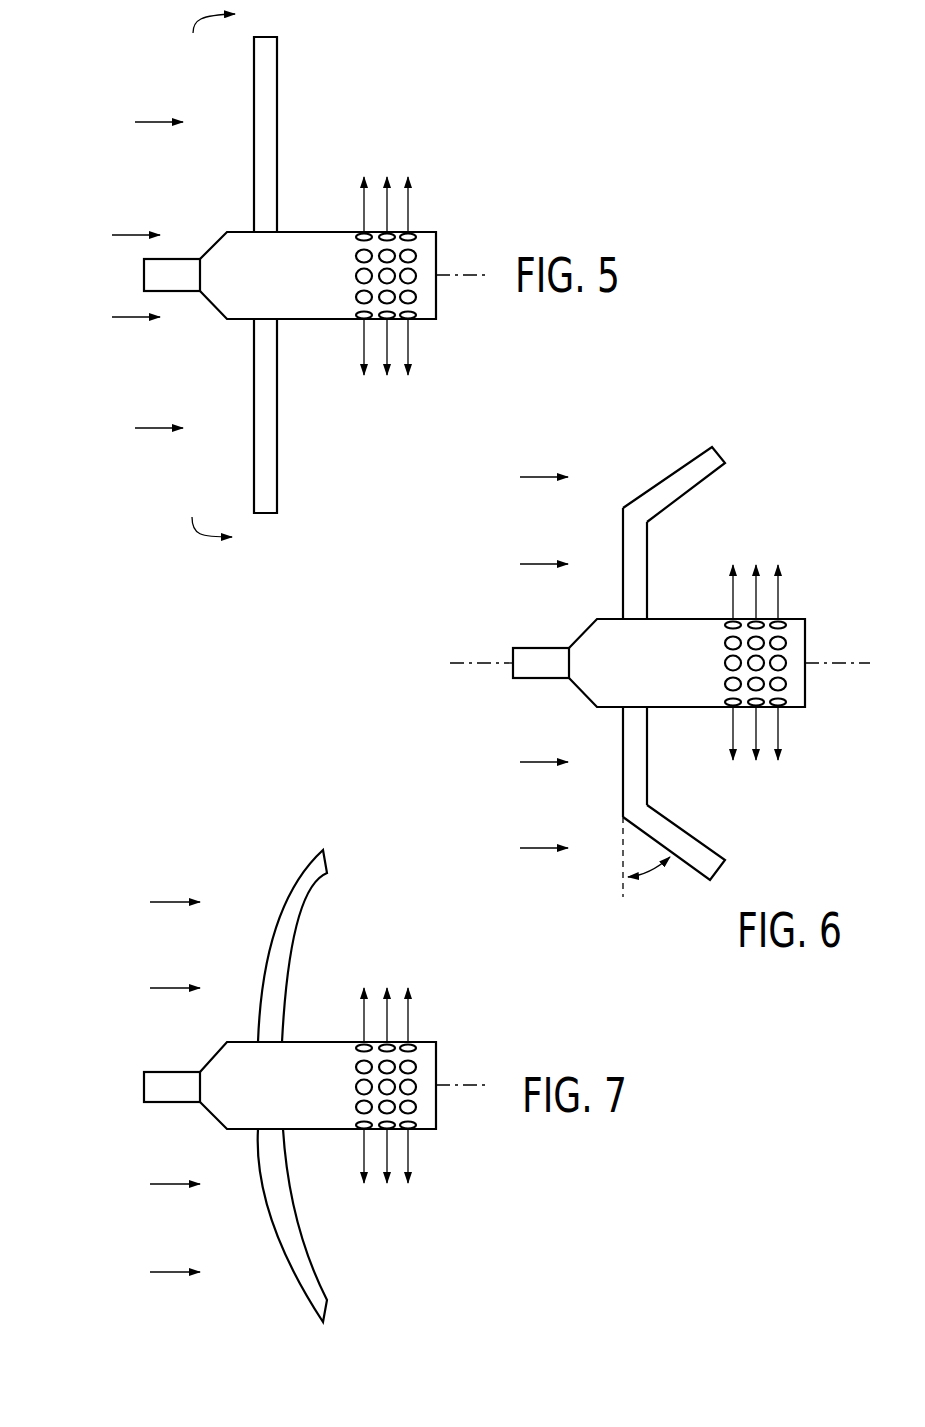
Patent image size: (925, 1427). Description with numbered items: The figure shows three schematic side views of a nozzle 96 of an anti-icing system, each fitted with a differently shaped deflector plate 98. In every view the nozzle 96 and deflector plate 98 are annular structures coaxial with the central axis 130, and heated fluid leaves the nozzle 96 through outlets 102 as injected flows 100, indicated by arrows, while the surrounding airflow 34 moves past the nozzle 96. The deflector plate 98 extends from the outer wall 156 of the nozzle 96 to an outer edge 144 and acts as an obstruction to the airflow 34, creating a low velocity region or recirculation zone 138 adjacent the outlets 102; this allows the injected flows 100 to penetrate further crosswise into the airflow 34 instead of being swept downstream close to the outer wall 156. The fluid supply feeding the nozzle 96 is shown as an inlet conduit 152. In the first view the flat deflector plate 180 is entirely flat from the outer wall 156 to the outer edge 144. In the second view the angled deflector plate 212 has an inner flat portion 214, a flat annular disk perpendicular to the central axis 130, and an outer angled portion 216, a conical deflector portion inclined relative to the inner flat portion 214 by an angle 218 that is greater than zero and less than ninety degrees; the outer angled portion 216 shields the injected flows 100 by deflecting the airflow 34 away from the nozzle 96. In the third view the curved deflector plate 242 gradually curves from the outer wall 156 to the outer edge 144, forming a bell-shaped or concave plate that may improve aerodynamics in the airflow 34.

In FIG. 5, the airflow 34 is at (158, 426).
In FIG. 6, the airflow 34 is at (535, 762).
In FIG. 7, the airflow 34 is at (168, 1184).
In FIG. 5, the nozzle 96 is at (275, 261).
In FIG. 6, the nozzle 96 is at (652, 653).
In FIG. 7, the nozzle 96 is at (275, 1078).
In FIG. 5, the deflector plate 98 is at (264, 296).
In FIG. 6, the deflector plate 98 is at (669, 671).
In FIG. 7, the deflector plate 98 is at (309, 1088).
In FIG. 5, the injected flows 100 is at (408, 210).
In FIG. 6, the injected flows 100 is at (778, 596).
In FIG. 7, the injected flows 100 is at (408, 1020).
In FIG. 5, the outlets 102 is at (357, 275).
In FIG. 6, the outlets 102 is at (725, 663).
In FIG. 7, the outlets 102 is at (357, 1087).
In FIG. 5, the central axis 130 is at (467, 270).
In FIG. 6, the central axis 130 is at (830, 666).
In FIG. 7, the central axis 130 is at (466, 1088).
In FIG. 5, the recirculation zone 138 is at (306, 405).
In FIG. 6, the recirculation zone 138 is at (690, 793).
In FIG. 5, the outer edge 144 is at (265, 513).
In FIG. 7, the outer edge 144 is at (327, 1310).
In FIG. 5, the fuel supply conduit 152 is at (144, 275).
In FIG. 6, the fuel supply conduit 152 is at (540, 648).
In FIG. 7, the fuel supply conduit 152 is at (144, 1085).
In FIG. 5, the outer wall 156 is at (343, 319).
In FIG. 6, the outer wall 156 is at (687, 707).
In FIG. 7, the outer wall 156 is at (308, 1129).
In FIG. 5, the flat deflector plate 180 is at (254, 83).
In FIG. 6, the angled deflector plate 212 is at (713, 460).
In FIG. 6, the inner flat portion 214 is at (622, 538).
In FIG. 6, the outer angled portion 216 is at (716, 472).
In FIG. 6, the angle 218 is at (676, 868).
In FIG. 7, the curved deflector plate 242 is at (322, 915).